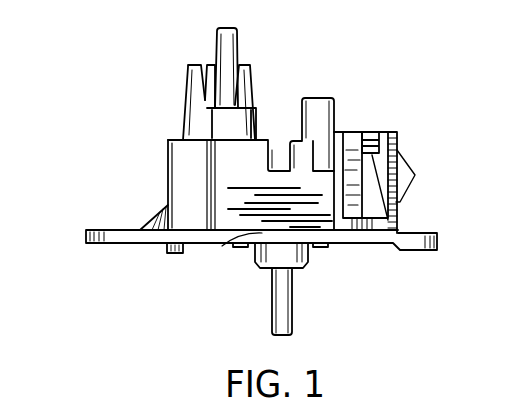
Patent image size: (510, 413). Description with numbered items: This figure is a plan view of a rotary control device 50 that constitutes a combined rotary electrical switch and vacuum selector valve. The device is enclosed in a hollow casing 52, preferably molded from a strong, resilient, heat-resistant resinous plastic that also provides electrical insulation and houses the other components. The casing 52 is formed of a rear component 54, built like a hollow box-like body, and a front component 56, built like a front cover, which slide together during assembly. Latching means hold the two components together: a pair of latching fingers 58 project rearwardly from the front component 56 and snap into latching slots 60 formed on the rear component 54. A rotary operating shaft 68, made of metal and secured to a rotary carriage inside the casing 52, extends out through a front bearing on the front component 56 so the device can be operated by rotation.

The rotary control device 50 is at (124, 196).
The casing 52 is at (226, 208).
The rear component 54 is at (178, 162).
The front component 56 is at (350, 244).
The latching fingers 58 is at (370, 170).
The latching slots 60 is at (371, 131).
The rotary operating shaft 68 is at (286, 311).